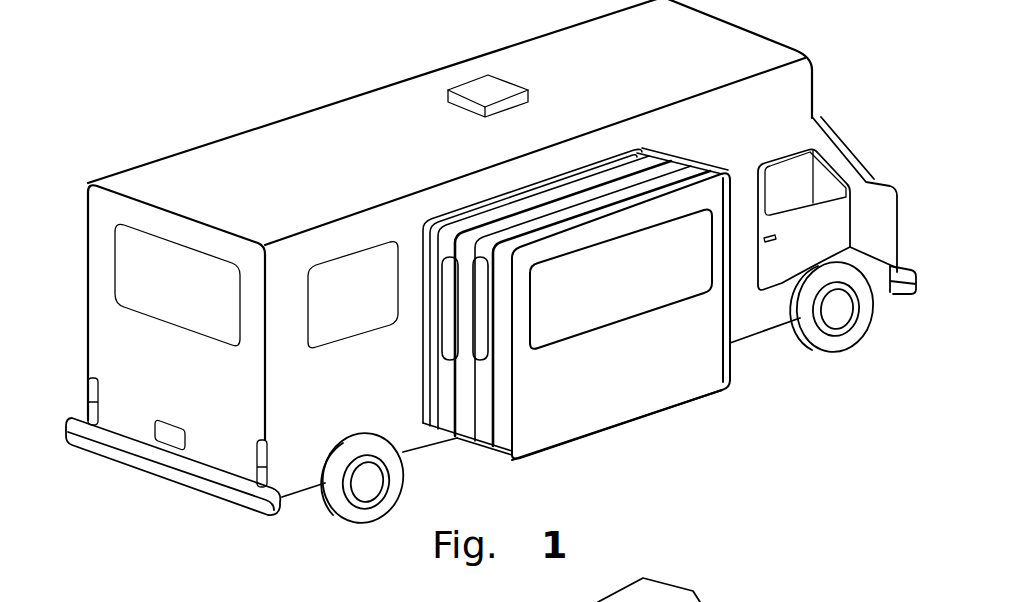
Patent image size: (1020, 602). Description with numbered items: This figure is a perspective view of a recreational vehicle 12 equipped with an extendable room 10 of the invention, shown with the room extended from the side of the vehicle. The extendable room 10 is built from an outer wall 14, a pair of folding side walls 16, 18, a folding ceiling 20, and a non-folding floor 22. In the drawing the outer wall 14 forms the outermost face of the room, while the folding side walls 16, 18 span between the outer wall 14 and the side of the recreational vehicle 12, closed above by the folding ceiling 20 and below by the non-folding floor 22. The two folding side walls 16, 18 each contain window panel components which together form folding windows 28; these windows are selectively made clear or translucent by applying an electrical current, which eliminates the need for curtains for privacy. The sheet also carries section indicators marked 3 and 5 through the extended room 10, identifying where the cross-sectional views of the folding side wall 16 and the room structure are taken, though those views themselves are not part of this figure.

The extendable room 10 is at (745, 441).
The recreational vehicle 12 is at (355, 137).
The outer wall 14 is at (635, 390).
The folding side wall 16 is at (480, 445).
The folding side wall 18 is at (744, 354).
The folding ceiling 20 is at (662, 173).
The non-folding floor 22 is at (646, 418).
The folding windows 28 is at (445, 327).
The section line 3- 3 is at (558, 388).
The section line 5- 5 is at (535, 165).